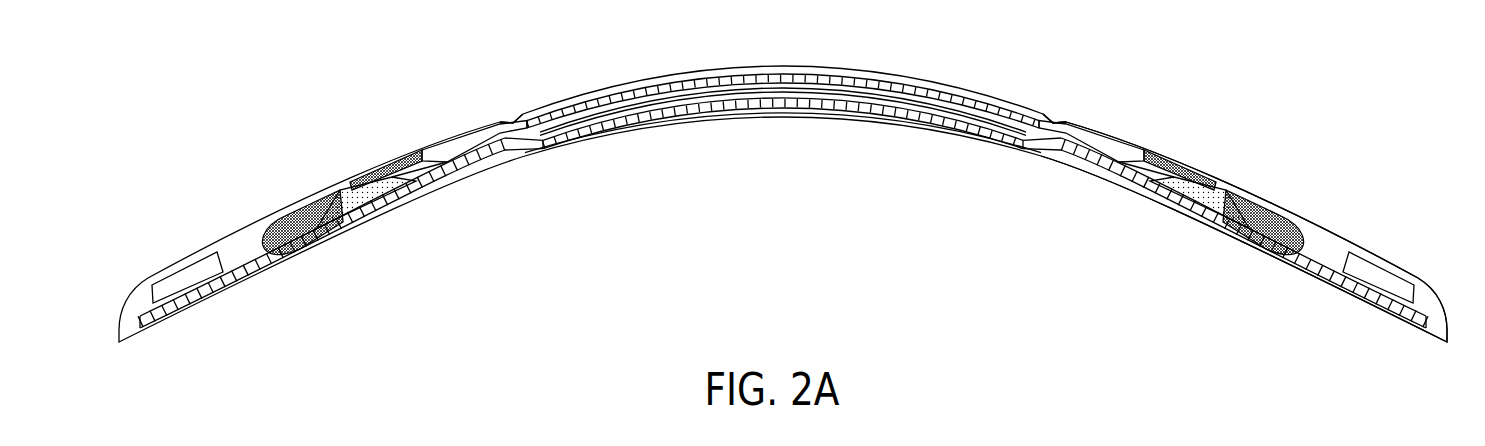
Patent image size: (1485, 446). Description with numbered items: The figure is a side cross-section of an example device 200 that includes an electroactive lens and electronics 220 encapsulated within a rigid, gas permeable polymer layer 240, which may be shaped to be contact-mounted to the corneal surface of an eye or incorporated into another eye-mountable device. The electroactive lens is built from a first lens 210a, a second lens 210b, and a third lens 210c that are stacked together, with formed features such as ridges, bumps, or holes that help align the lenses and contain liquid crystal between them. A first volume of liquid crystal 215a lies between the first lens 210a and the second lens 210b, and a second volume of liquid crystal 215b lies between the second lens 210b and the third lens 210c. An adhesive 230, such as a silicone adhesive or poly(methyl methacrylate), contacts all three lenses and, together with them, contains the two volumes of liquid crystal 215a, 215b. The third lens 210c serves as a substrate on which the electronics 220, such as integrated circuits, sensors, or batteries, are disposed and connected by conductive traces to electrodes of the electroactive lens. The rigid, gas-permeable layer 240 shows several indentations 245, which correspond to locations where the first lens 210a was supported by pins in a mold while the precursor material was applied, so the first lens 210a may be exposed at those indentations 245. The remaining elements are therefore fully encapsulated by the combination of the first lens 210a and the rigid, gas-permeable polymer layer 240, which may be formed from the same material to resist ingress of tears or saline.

The device 200 is at (312, 123).
The indentations 245 is at (512, 120).
The first lens 210a is at (848, 78).
The second lens 210b is at (948, 112).
The third lens 210c is at (987, 143).
The first volume of liquid crystal 215a is at (1138, 162).
The second volume of liquid crystal 215b is at (1220, 205).
The adhesive 230 is at (1277, 207).
The rigid, gas permeable polymer layer 240 is at (1335, 247).
The electronics 220 is at (1383, 283).